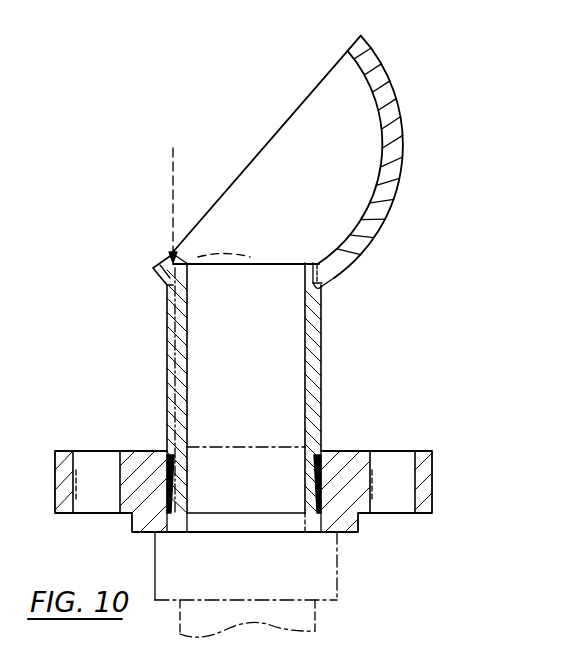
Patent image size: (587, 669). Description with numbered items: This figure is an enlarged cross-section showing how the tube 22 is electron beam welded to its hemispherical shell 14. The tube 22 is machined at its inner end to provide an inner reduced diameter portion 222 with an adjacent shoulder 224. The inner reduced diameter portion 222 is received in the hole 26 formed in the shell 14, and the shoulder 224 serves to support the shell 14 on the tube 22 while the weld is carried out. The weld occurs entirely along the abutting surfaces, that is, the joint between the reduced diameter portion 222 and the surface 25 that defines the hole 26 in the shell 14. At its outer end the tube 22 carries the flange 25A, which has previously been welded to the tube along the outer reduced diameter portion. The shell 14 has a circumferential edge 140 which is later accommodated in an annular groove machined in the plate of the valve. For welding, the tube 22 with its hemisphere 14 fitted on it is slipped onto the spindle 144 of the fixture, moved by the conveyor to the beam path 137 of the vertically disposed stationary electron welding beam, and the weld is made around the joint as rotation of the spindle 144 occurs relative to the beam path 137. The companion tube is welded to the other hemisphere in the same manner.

The shell 14 is at (398, 97).
The circumferential edge 140 is at (358, 38).
The beam path 137 is at (173, 150).
The tube 22 is at (322, 346).
The inner reduced diameter portion 222 is at (322, 279).
The shoulder 224 is at (318, 296).
The surface defining hole 25 is at (300, 262).
The flange 25A is at (430, 451).
The hole 26 is at (250, 257).
The spindle 144 is at (315, 605).